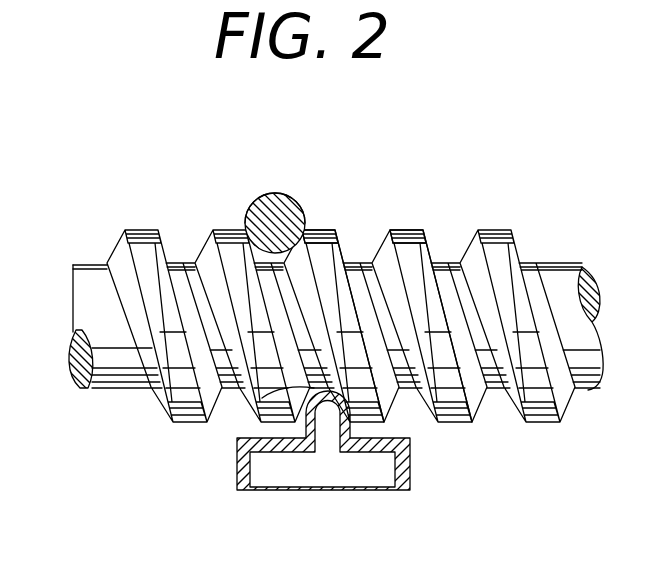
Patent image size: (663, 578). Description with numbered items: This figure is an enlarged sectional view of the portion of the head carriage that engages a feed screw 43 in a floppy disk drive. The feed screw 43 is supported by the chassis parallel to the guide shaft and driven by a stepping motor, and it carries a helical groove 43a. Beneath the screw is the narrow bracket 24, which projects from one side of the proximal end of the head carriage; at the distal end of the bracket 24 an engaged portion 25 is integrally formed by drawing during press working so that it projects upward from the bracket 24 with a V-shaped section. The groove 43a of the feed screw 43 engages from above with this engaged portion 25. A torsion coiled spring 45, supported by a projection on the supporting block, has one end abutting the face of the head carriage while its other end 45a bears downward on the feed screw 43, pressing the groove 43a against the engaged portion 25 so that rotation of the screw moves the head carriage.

The narrow bracket 24 is at (285, 474).
The engaged portion 25 is at (262, 398).
The feed screw 43 is at (98, 293).
The groove 43a is at (453, 282).
The torsion coiled spring 45 is at (257, 207).
The other end of the spring 45a is at (280, 209).